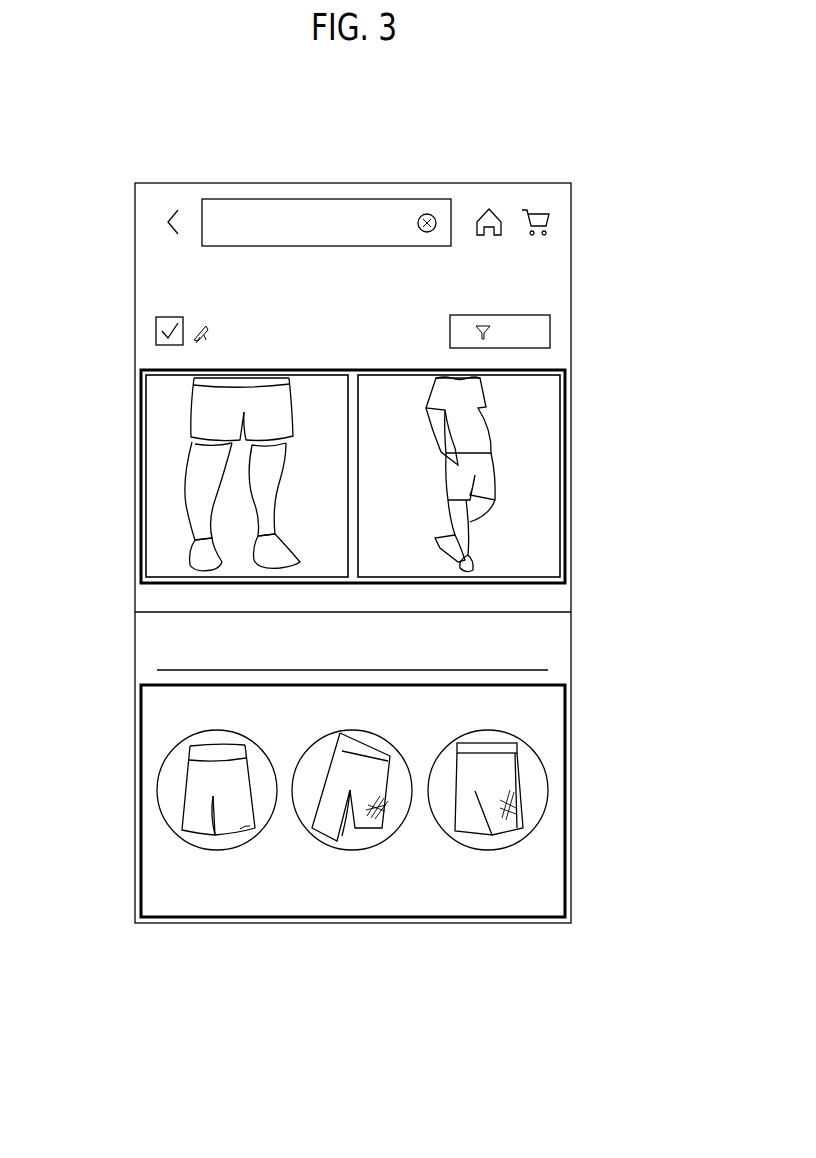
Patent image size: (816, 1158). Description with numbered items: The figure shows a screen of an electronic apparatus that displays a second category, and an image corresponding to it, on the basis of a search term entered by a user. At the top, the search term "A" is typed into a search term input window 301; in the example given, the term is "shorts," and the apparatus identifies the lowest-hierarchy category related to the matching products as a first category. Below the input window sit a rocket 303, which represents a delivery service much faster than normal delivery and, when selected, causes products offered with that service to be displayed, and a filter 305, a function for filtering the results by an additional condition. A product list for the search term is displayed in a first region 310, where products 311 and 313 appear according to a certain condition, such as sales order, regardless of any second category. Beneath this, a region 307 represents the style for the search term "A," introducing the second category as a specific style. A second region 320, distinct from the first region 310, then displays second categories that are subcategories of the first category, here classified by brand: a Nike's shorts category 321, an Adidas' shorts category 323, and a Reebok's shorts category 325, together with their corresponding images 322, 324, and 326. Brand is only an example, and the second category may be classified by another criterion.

The search term input window 301 is at (325, 199).
The rocket 303 is at (155, 334).
The filter 305 is at (552, 330).
The region 307 is at (352, 651).
The first region 310 is at (566, 474).
The product 311 is at (157, 436).
The product 313 is at (554, 421).
The second region 320 is at (566, 798).
The Nike's shorts category 321 is at (216, 918).
The image 322 is at (158, 790).
The Adidas' shorts category 323 is at (352, 918).
The image 324 is at (387, 737).
The Reebok's shorts category 325 is at (488, 918).
The image 326 is at (550, 762).